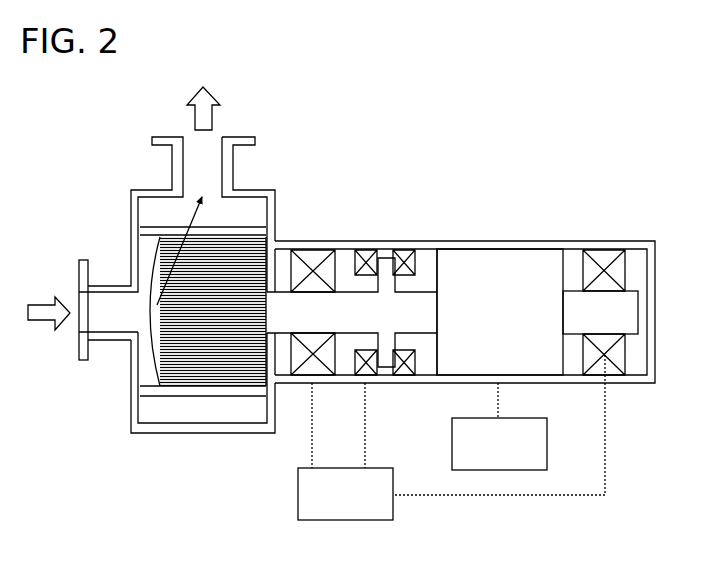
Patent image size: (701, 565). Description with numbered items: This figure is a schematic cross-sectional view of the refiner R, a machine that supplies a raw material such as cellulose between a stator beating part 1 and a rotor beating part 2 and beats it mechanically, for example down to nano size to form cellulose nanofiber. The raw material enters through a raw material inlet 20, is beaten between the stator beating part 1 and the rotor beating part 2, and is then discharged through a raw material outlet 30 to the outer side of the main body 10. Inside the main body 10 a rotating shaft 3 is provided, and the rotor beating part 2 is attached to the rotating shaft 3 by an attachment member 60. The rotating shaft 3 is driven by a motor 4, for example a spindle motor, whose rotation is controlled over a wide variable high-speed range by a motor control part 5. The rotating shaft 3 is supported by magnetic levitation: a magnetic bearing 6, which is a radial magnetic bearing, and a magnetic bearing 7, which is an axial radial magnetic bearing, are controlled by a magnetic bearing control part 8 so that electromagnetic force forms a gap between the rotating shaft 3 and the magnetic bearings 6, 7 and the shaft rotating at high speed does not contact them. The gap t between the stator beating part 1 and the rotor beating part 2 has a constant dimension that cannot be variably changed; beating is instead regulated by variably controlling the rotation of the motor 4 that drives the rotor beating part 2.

The stator beating part 1 is at (158, 232).
The rotor beating part 2 is at (217, 252).
The rotating shaft 3 is at (408, 302).
The motor 4 is at (533, 272).
The motor control part 5 is at (510, 428).
The magnetic bearing (radial magnetic bearing) 6 is at (312, 258).
The magnetic bearing (axial radial magnetic bearing) 7 is at (402, 253).
The magnetic bearing control part 8 is at (378, 512).
The main body 10 is at (508, 248).
The raw material inlet 20 is at (98, 322).
The raw material outlet 30 is at (208, 150).
The attachment member 60 is at (158, 297).
The gap t is at (115, 395).
The refiner R is at (482, 103).